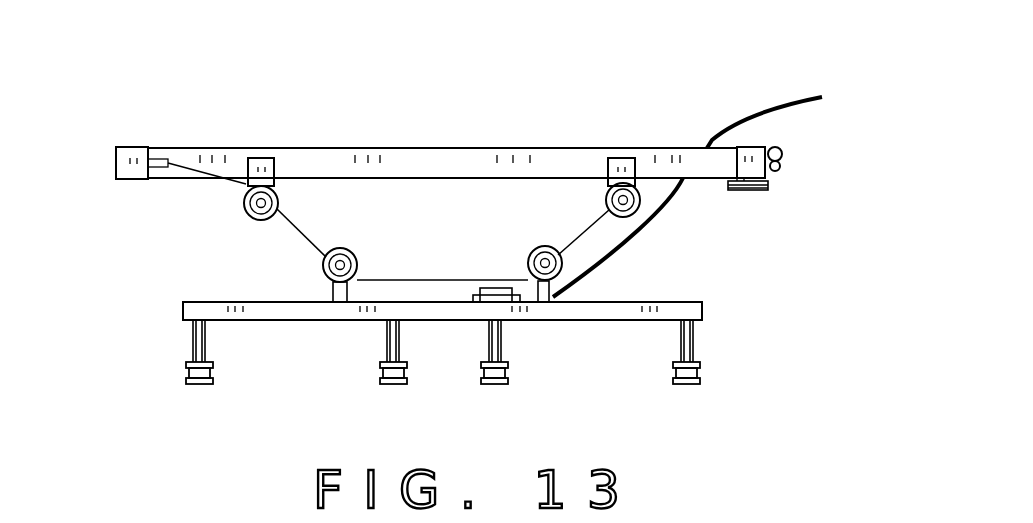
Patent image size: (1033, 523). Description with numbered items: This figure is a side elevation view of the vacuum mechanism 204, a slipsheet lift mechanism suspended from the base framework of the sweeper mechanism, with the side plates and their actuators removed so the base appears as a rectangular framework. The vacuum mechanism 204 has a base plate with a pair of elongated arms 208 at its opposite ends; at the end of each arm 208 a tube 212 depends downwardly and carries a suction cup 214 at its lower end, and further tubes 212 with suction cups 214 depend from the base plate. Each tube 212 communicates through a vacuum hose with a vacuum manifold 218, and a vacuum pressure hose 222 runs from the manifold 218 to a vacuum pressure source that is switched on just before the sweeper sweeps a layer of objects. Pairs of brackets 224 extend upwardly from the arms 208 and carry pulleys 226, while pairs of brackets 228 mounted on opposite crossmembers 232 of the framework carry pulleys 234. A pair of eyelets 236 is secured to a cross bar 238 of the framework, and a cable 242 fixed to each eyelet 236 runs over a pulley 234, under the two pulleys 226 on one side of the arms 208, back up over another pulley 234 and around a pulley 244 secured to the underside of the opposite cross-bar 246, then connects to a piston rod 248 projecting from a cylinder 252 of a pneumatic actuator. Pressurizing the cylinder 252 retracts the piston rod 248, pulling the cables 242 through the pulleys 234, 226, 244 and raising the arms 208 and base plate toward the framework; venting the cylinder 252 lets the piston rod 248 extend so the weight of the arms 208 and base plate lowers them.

The vacuum mechanism 204 is at (667, 55).
The elongated arm 208 is at (200, 302).
The tube 212 is at (195, 338).
The suction cup 214 is at (200, 386).
The vacuum manifold 218 is at (497, 297).
The vacuum pressure hose 222 is at (642, 237).
The bracket 224 is at (333, 292).
The pulley 226 is at (357, 262).
The bracket 228 is at (265, 170).
The crossmember 232 is at (468, 156).
The pulley 234 is at (245, 208).
The eyelet 236 is at (165, 158).
The cross bar 238 is at (116, 161).
The cable 242 is at (300, 230).
The pulley 244 is at (758, 190).
The cross-bar 246 is at (753, 143).
The piston rod 248 is at (771, 177).
The cylinder 252 is at (783, 156).